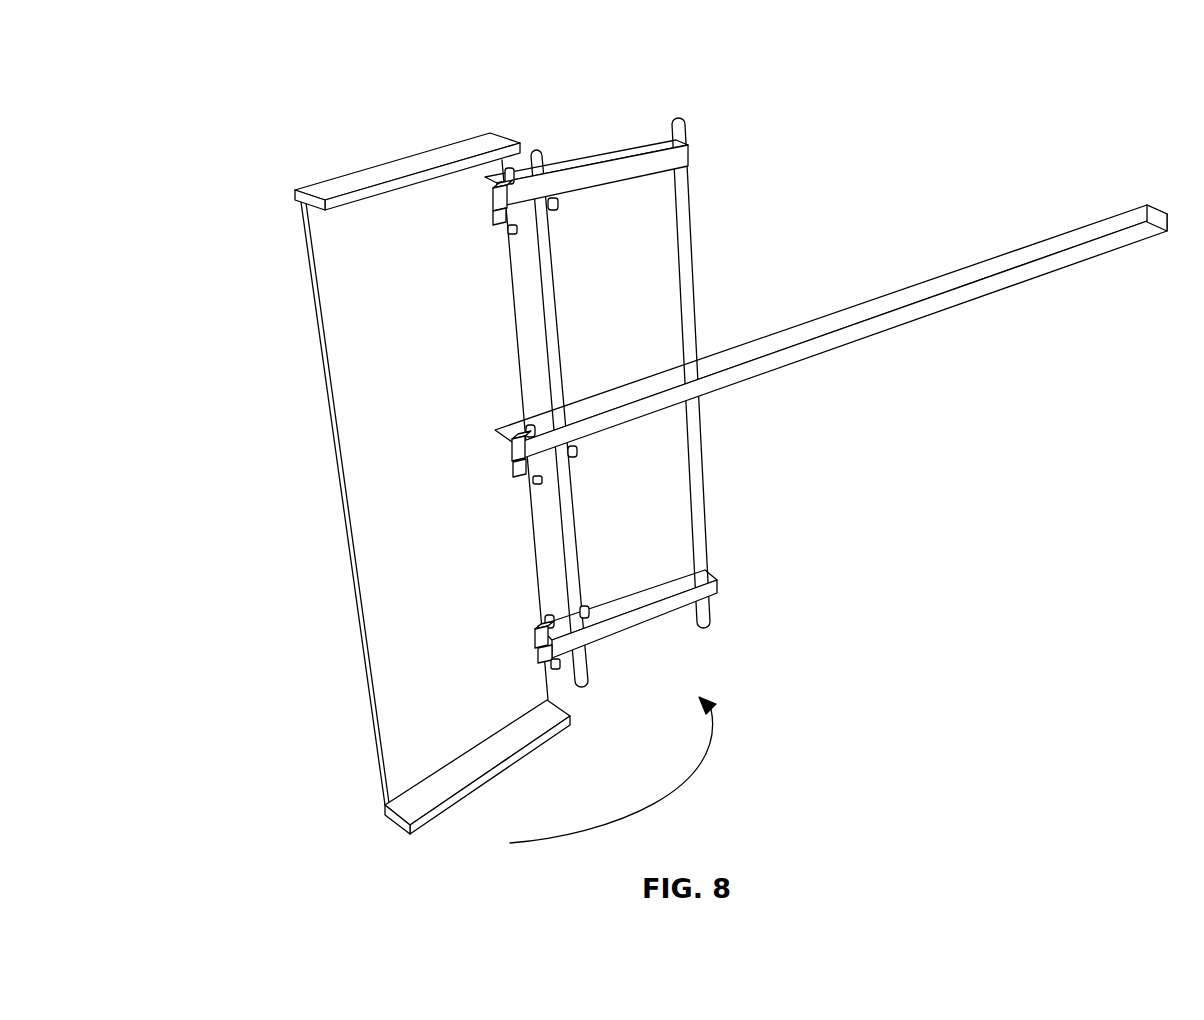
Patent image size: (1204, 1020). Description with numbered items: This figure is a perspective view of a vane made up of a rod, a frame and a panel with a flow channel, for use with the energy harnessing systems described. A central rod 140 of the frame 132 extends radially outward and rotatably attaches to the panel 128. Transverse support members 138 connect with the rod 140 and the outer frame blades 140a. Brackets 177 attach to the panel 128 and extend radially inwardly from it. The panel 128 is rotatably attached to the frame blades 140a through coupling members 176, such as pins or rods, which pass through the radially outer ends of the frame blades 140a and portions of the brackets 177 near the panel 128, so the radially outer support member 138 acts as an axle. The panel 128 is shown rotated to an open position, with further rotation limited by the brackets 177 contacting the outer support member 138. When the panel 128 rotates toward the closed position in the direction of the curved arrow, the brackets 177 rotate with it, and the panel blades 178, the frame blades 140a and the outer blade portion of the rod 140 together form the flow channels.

The panel 128 is at (313, 84).
The frame 132 is at (900, 188).
The transverse support member 138 is at (690, 246).
The central rod 140 is at (860, 327).
The frame blade 140a is at (614, 148).
The coupling member 176 is at (510, 232).
The bracket 177 is at (555, 210).
The panel blade 178 is at (418, 157).